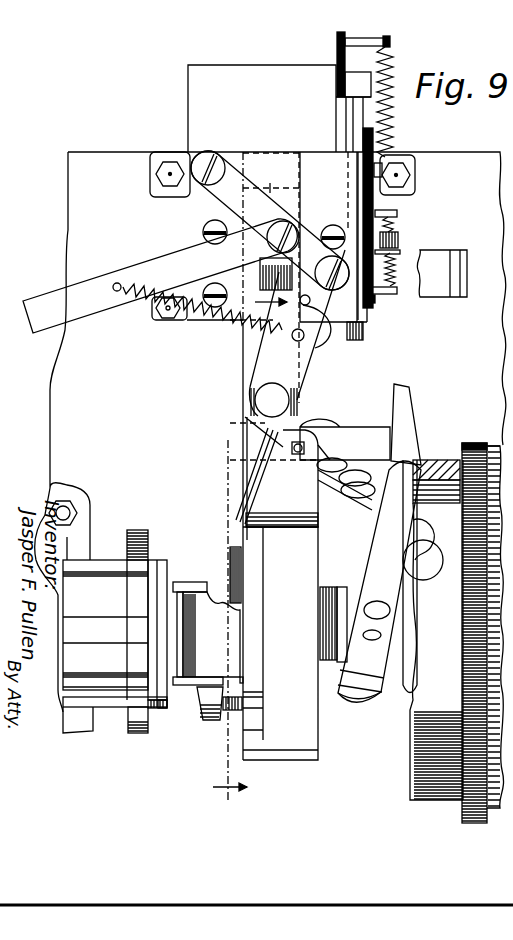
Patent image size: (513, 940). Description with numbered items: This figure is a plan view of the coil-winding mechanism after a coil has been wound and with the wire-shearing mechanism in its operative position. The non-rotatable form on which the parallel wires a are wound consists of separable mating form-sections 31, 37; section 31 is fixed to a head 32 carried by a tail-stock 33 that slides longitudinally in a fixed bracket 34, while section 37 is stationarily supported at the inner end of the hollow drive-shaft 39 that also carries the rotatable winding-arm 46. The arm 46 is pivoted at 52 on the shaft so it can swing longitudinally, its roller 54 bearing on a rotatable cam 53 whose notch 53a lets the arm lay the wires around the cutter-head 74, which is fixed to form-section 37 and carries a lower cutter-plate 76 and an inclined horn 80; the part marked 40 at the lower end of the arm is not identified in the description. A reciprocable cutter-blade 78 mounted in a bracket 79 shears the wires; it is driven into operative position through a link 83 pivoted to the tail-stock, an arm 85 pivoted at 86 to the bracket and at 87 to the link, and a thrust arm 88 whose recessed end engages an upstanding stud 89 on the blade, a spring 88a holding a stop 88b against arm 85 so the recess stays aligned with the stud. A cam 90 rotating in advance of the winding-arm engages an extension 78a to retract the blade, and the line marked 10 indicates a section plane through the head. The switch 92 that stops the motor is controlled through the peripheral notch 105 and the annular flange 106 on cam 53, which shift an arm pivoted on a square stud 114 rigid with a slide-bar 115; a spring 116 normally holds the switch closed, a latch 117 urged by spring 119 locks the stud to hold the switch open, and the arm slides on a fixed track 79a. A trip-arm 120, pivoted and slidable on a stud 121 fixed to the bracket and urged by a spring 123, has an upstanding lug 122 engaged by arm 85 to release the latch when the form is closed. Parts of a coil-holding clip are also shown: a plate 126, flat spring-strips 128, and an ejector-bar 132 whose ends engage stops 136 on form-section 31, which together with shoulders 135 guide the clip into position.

The section line 10 is at (250, 489).
The form-section 31 is at (138, 733).
The head 32 is at (100, 708).
The tail-stock 33 is at (63, 597).
The bracket 34 is at (62, 540).
The form-section 37 is at (253, 596).
The hollow drive-shaft 39 is at (347, 600).
The lever end 40 is at (330, 688).
The winding-arm 46 is at (371, 547).
The pivot 52 is at (388, 615).
The rotatable cam 53 is at (407, 740).
The notch 53a is at (417, 550).
The roller 54 is at (422, 573).
The cutter-head 74 is at (282, 478).
The lower cutter-plate 76 is at (247, 362).
The cutter-blade 78 is at (271, 173).
The extension 78a is at (368, 430).
The bracket 79 is at (328, 237).
The fixed track 79a is at (436, 292).
The inclined guide or horn 80 is at (229, 433).
The link 83 is at (107, 280).
The arm 85 is at (248, 187).
The pivot 86 is at (203, 156).
The pivot 87 is at (296, 231).
The thrust arm 88 is at (310, 340).
The spring 88a is at (187, 321).
The stop 88b is at (333, 345).
The upstanding stud 89 is at (277, 398).
The cam 90 is at (403, 393).
The switch 92 is at (338, 36).
The peripheral notch 105 is at (477, 443).
The annular flange 106 is at (463, 797).
The square stud 114 is at (413, 273).
The bar 115 is at (358, 113).
The spring 116 is at (392, 62).
The latch 117 is at (377, 303).
The spring 119 is at (398, 240).
The trip-arm 120 is at (372, 193).
The stud 121 is at (404, 175).
The upstanding lug 122 is at (378, 133).
The spring 123 is at (396, 219).
The plate 126 is at (208, 633).
The flat spring-strips 128 is at (197, 683).
The ejector-bar 132 is at (193, 560).
The shoulders 135 is at (160, 711).
The stops 136 is at (152, 706).
The wires a is at (240, 470).